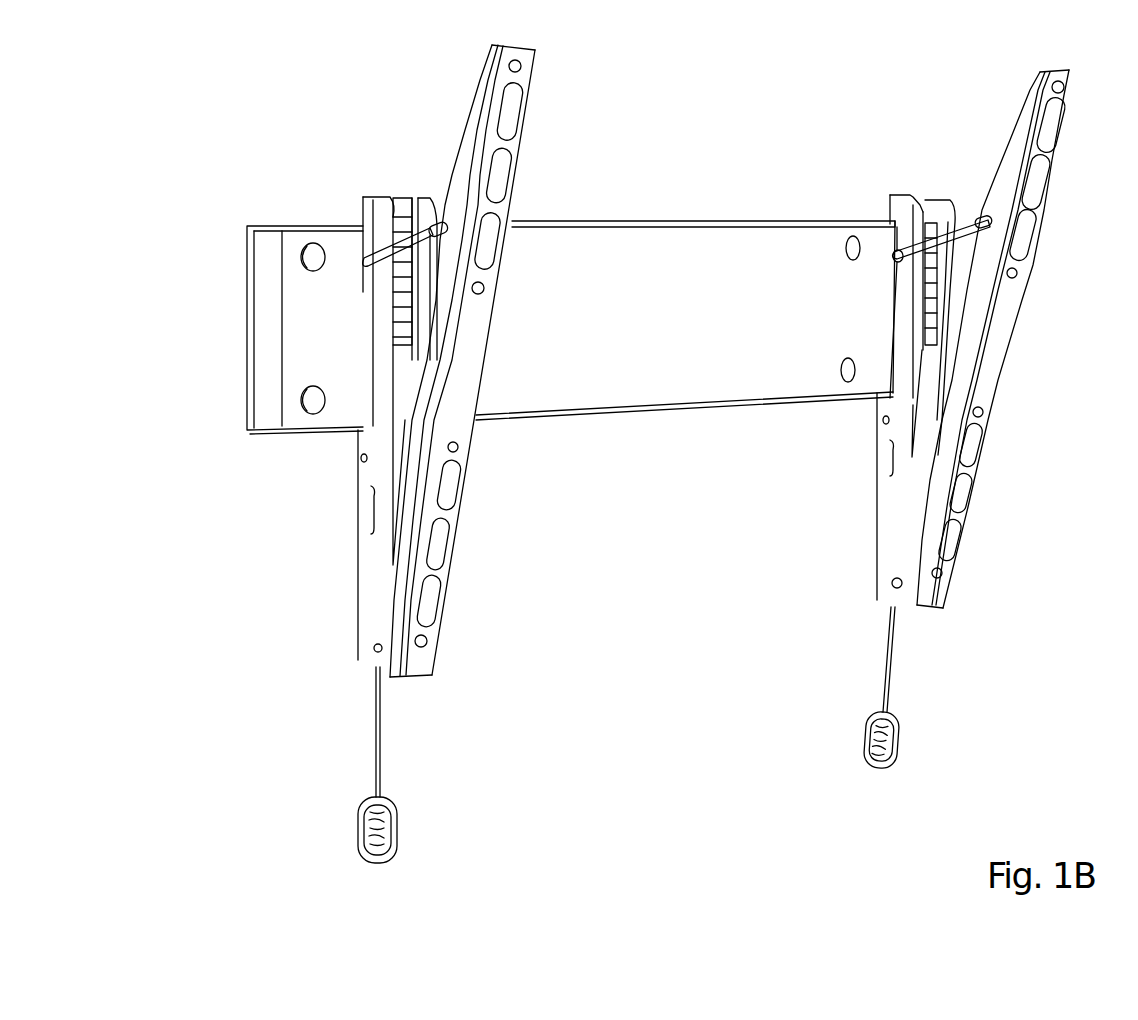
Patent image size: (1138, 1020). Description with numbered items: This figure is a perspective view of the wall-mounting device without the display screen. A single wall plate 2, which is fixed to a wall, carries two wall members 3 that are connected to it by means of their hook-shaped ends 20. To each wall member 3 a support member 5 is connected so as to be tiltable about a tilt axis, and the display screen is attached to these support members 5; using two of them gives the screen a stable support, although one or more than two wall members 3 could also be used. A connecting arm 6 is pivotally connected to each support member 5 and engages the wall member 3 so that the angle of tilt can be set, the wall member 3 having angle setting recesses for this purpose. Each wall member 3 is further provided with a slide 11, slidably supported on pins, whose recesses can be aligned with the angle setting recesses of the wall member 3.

The wall plate 2 is at (628, 262).
The wall member 3 is at (372, 197).
The support member 5 is at (478, 97).
The connecting arm 6 is at (412, 193).
The slide 11 is at (555, 271).
The hook-shaped ends 20 is at (365, 226).